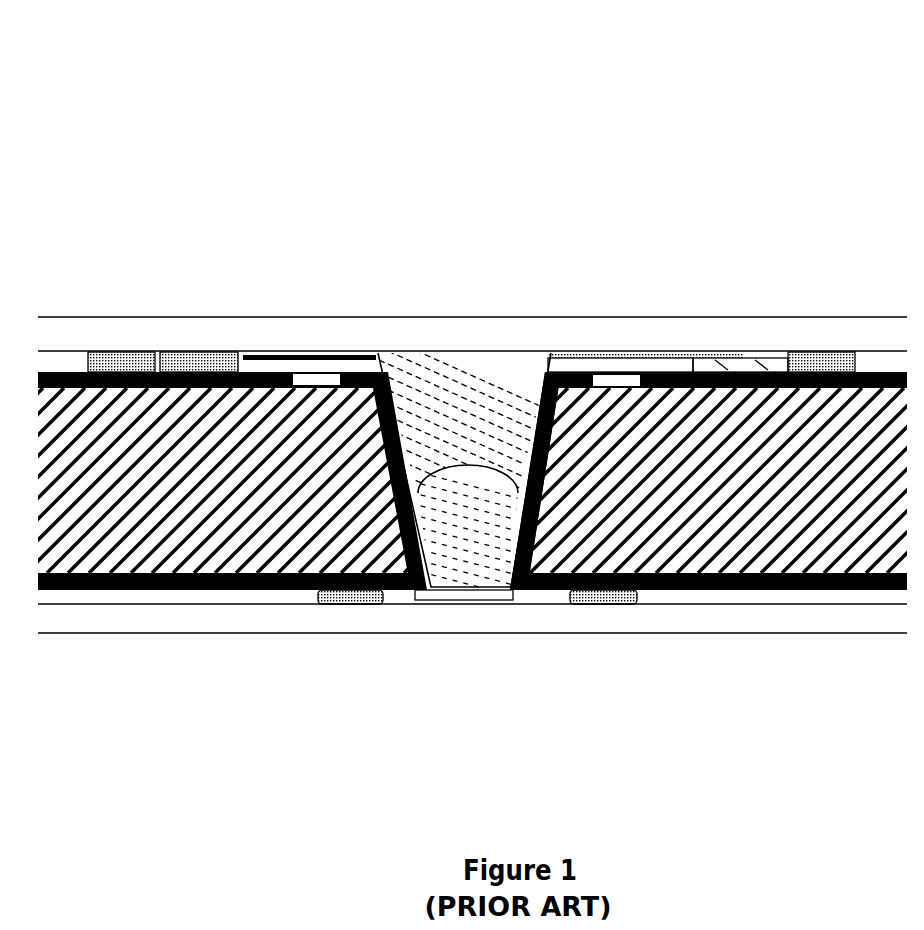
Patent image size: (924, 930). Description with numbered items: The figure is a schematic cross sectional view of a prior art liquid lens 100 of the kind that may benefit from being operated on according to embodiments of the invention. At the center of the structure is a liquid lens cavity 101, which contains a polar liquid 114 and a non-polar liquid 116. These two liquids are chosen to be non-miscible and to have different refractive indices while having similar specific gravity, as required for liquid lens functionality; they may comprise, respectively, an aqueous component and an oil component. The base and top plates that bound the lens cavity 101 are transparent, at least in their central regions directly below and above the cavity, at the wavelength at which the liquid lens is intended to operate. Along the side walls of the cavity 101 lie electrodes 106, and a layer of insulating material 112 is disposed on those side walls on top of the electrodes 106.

The liquid lens 100 is at (166, 131).
The liquid lens cavity 101 is at (606, 356).
The electrodes 106 is at (362, 527).
The insulating material 112 is at (380, 352).
The polar liquid 114 is at (473, 365).
The non-polar liquid 116 is at (492, 519).